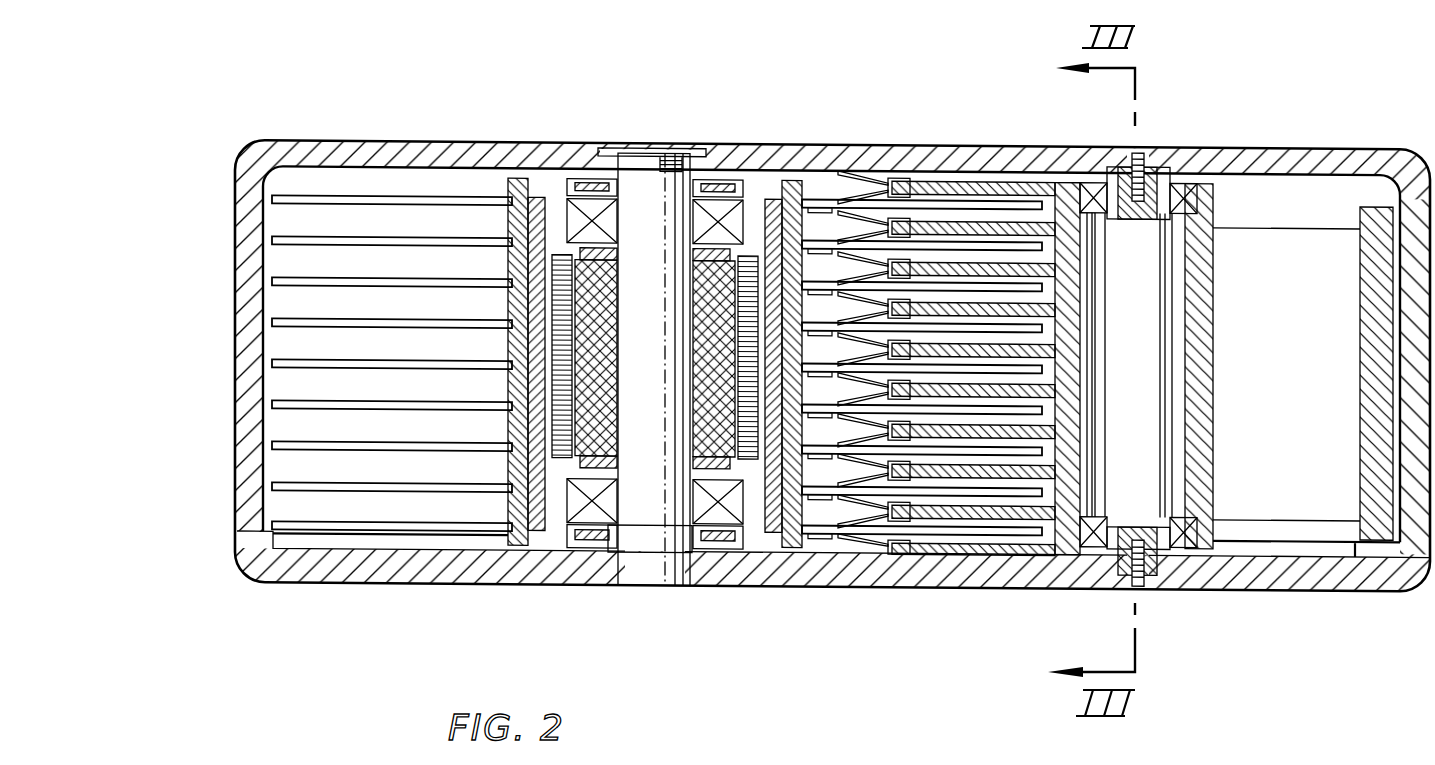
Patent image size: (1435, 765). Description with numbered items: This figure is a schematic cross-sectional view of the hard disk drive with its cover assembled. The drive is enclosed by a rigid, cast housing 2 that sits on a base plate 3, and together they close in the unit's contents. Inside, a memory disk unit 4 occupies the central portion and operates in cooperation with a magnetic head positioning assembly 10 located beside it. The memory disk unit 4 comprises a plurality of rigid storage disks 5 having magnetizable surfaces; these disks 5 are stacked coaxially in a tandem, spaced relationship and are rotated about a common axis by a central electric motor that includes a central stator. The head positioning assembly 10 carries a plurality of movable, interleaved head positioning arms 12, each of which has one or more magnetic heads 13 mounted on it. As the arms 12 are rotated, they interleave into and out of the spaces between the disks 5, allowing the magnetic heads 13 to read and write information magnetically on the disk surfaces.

The housing 2 is at (1336, 150).
The base plate 3 is at (1288, 590).
The memory disk unit 4 is at (648, 230).
The rigid storage disks 5 is at (357, 236).
The magnetic head positioning assembly 10 is at (1140, 287).
The head positioning arms 12 is at (990, 216).
The magnetic heads 13 is at (849, 216).